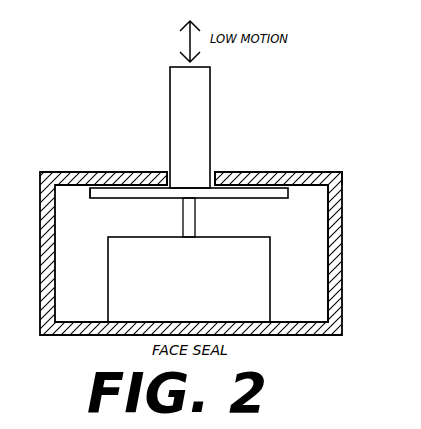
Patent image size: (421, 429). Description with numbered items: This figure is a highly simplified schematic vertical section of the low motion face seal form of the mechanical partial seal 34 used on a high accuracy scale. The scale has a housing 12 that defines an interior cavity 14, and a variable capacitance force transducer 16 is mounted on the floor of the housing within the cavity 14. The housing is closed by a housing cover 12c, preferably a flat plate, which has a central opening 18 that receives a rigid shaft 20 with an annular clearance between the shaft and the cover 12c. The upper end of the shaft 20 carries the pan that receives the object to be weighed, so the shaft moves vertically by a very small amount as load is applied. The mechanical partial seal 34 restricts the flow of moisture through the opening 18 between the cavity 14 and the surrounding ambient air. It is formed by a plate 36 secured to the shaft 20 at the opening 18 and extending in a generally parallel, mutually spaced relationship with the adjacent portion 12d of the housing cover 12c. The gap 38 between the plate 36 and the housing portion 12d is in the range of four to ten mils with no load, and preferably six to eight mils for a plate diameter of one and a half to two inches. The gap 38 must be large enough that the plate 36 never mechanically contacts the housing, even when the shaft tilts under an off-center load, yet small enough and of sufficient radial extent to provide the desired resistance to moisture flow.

The housing 12 is at (343, 205).
The housing cover 12c is at (97, 164).
The adjacent portion of the housing cover 12d is at (263, 171).
The interior cavity 14 is at (306, 267).
The variable capacitance force transducer 16 is at (108, 284).
The central opening 18 is at (167, 166).
The rigid shaft 20 is at (210, 107).
The mechanical partial seal 34 is at (215, 167).
The plate 36 is at (248, 198).
The gap 38 is at (87, 189).